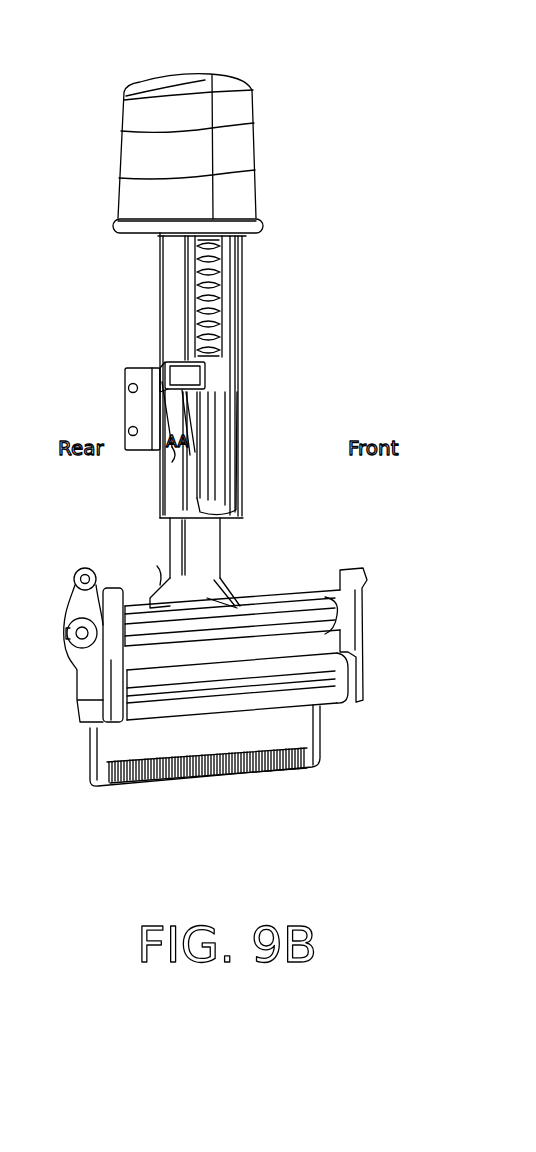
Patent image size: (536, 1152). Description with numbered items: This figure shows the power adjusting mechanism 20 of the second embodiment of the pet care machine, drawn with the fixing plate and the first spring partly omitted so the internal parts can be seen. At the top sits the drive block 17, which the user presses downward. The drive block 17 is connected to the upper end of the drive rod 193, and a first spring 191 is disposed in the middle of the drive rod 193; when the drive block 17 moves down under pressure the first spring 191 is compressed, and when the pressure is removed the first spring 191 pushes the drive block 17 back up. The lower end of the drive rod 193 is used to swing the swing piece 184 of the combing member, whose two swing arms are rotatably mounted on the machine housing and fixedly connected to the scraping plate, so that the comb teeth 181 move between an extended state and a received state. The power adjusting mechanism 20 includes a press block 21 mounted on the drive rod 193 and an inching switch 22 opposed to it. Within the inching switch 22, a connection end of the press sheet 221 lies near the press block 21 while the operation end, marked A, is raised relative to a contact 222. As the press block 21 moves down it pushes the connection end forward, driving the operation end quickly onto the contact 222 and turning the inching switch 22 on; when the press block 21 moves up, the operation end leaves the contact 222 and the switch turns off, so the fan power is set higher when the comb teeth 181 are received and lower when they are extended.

The drive block 17 is at (255, 148).
The power adjusting mechanism 20 is at (140, 340).
The inching switch 22 is at (122, 412).
The first spring 191 is at (230, 268).
The drive rod 193 is at (242, 340).
The press block 21 is at (204, 374).
The press sheet 221 is at (177, 418).
The contact 222 is at (165, 452).
The swing piece 184 is at (233, 586).
The comb teeth 181 is at (320, 758).